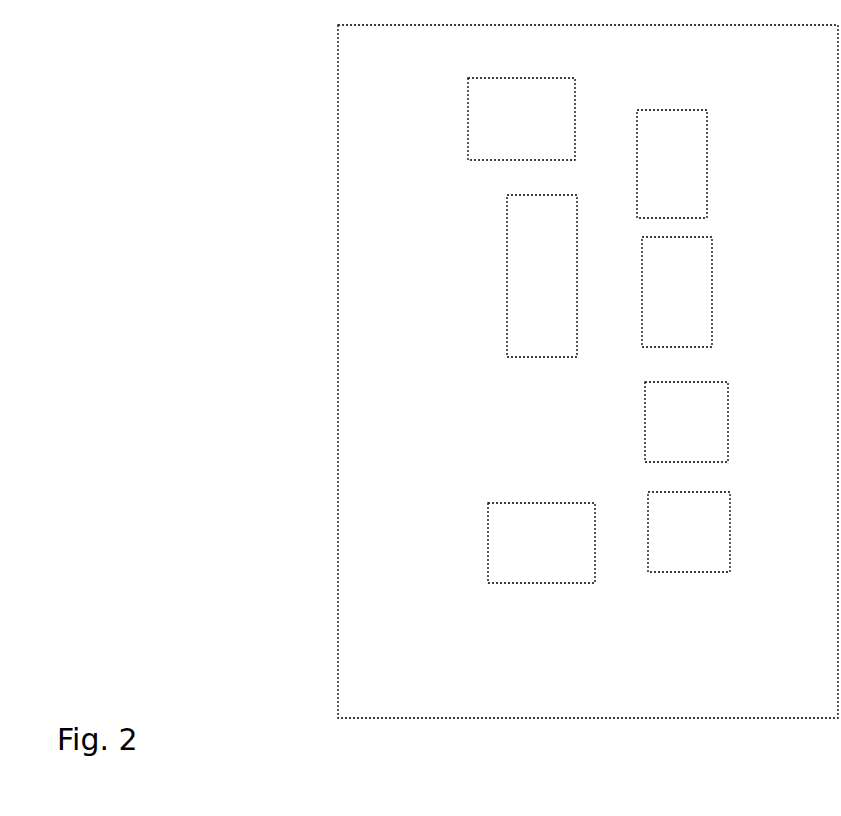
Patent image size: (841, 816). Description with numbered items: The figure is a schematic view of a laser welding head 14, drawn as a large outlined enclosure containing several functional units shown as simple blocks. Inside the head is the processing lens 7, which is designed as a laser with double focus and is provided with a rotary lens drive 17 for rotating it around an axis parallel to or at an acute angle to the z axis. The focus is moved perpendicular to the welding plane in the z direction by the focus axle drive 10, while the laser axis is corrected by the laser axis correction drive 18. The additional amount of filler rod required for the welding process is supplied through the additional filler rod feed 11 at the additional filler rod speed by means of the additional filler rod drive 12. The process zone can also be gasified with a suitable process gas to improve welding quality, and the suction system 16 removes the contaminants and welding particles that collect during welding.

The laser welding head 14 is at (230, 409).
The rotary lens drive 17 is at (487, 121).
The processing lens 7 is at (528, 284).
The laser axis correction drive 18 is at (693, 165).
The focus axle drive 10 is at (688, 272).
The additional filler rod feed 11 is at (703, 430).
The suction system 16 is at (525, 537).
The additional filler rod drive 12 is at (710, 542).